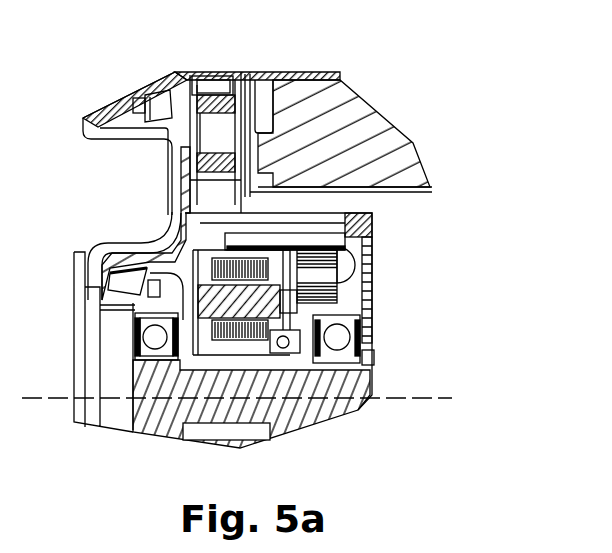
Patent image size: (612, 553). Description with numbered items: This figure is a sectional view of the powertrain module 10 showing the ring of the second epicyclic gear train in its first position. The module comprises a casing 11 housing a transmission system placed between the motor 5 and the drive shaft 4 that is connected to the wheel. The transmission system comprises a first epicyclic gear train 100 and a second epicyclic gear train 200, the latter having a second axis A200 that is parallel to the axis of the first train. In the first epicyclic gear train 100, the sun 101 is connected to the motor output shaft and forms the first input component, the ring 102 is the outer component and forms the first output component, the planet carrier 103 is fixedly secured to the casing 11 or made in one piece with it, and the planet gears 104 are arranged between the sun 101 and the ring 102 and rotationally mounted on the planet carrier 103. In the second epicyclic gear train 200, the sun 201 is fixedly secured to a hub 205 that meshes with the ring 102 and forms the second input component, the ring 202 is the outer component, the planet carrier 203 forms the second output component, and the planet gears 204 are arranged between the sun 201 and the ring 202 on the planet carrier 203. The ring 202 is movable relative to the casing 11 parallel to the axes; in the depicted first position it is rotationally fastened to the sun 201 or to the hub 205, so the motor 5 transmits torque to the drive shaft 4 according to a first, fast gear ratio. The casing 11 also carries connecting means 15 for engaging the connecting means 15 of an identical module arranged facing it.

The first epicyclic gear train 100 is at (133, 71).
The powertrain module 10 is at (314, 42).
The motor 5 is at (370, 128).
The casing 11 is at (96, 117).
The planet carrier 103 is at (167, 139).
The sun 101 is at (202, 72).
The planet gears 104 is at (217, 90).
The ring 102 is at (200, 195).
The hub 205 is at (200, 231).
The second epicyclic gear train 200 is at (385, 321).
The drive shaft 4 is at (327, 415).
The ring 202 is at (313, 225).
The sun 201 is at (237, 330).
The planet carrier 203 is at (238, 307).
The planet gears 204 is at (313, 268).
The connecting means 15 is at (373, 363).
The second axis A200 is at (438, 400).